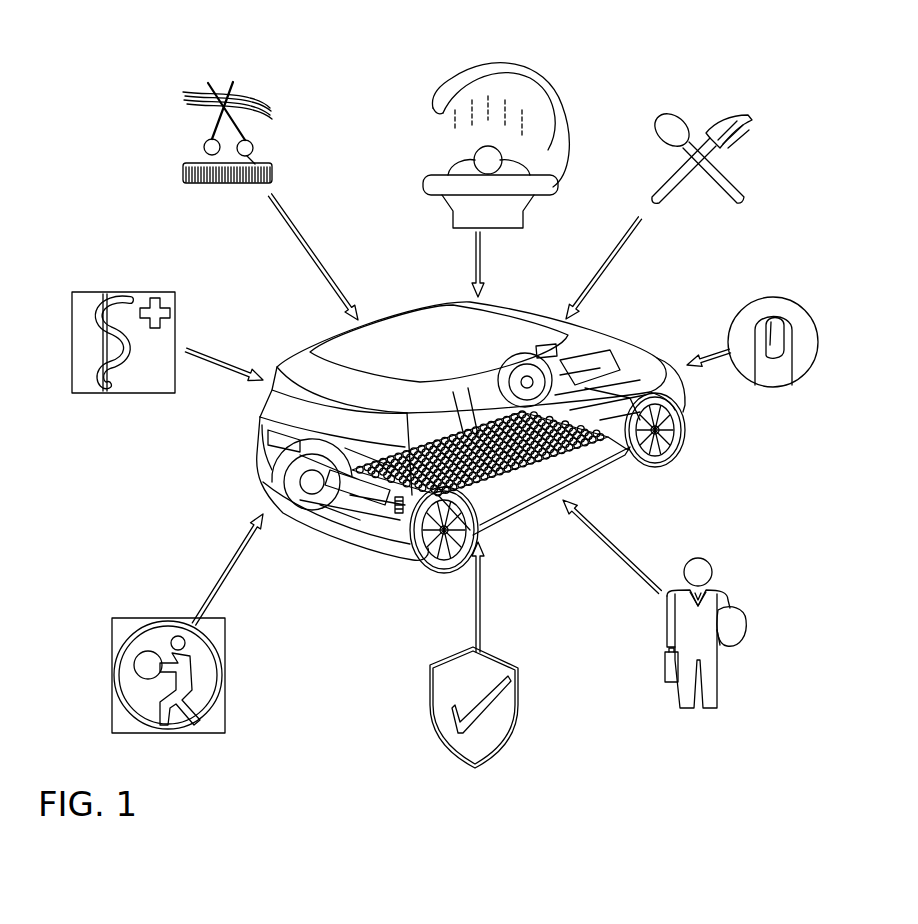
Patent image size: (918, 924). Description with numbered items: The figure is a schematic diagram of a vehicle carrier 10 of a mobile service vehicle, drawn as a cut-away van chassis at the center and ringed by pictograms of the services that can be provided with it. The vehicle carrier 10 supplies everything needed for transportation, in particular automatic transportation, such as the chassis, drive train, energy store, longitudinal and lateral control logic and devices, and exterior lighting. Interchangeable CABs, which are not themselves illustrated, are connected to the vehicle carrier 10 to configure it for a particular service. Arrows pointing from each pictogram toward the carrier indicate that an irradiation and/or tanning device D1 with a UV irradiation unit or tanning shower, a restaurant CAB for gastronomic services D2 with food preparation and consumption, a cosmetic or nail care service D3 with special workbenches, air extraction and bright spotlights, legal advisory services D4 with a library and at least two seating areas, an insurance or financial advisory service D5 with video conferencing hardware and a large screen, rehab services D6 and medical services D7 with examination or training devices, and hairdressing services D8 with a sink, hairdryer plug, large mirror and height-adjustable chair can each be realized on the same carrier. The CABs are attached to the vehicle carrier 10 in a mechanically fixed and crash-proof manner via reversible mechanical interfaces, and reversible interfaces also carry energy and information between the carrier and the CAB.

The vehicle carrier 10 is at (350, 563).
The irradiation and/or tanning device D1 is at (533, 92).
The gastronomic services D2 is at (723, 118).
The cosmetic or nail care service D3 is at (787, 298).
The legal advisory services D4 is at (720, 592).
The insurance advisory service or financial advisory service D5 is at (518, 678).
The rehab services D6 is at (133, 620).
The medical services D7 is at (100, 292).
The hairdressing services D8 is at (247, 95).